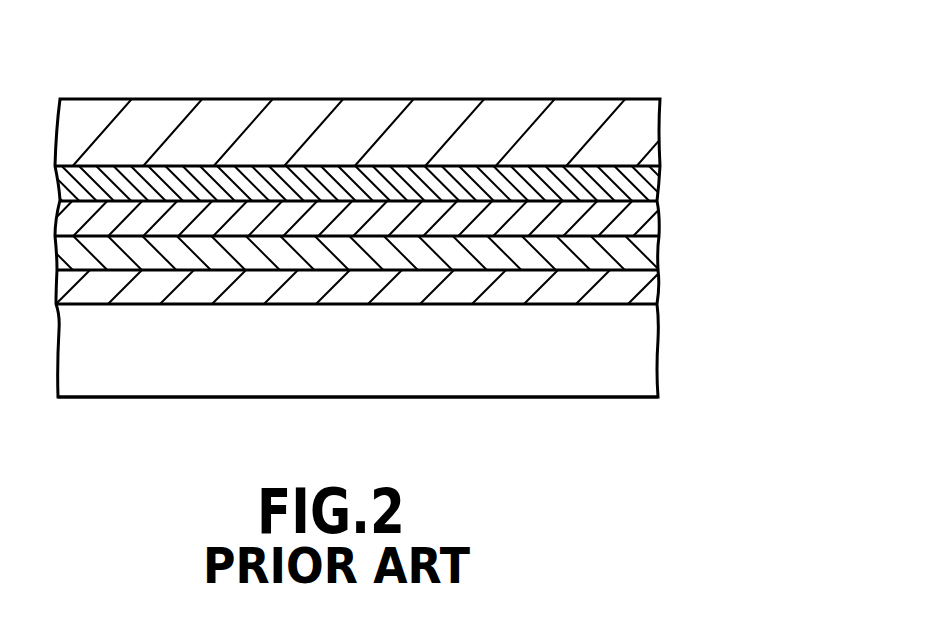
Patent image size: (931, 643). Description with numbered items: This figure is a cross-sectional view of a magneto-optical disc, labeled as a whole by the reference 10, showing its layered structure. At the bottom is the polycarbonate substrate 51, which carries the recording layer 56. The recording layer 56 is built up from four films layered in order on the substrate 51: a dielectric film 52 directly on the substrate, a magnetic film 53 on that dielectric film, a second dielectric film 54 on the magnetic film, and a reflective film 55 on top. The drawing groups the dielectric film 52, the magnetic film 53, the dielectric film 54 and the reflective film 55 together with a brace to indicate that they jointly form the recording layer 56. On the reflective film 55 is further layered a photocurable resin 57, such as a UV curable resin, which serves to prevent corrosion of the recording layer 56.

The magnetic recording medium (prior art) 10 is at (479, 91).
The polycarbonate substrate 51 is at (633, 360).
The dielectric film 52 is at (650, 283).
The magnetic film 53 is at (638, 255).
The dielectric film 54 is at (638, 222).
The reflective film 55 is at (640, 188).
The recording layer 56 is at (790, 167).
The photocurable resin 57 is at (642, 136).